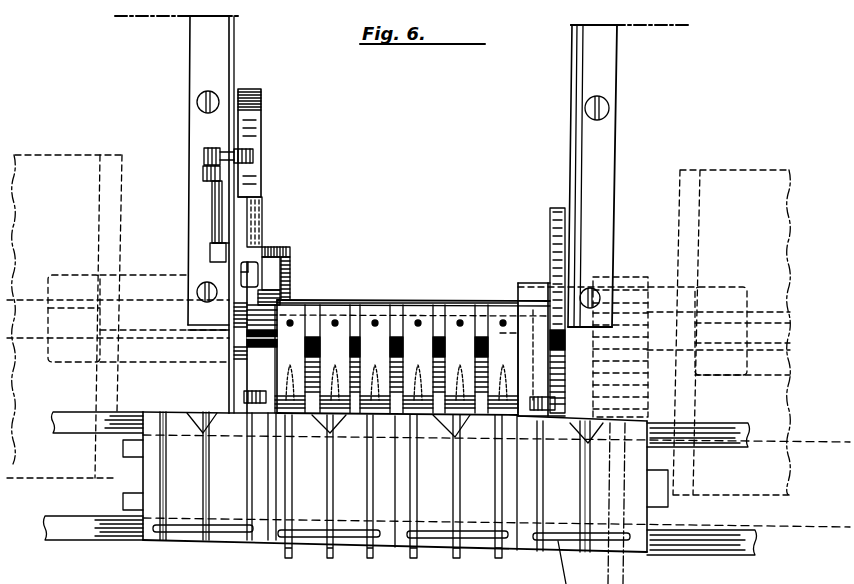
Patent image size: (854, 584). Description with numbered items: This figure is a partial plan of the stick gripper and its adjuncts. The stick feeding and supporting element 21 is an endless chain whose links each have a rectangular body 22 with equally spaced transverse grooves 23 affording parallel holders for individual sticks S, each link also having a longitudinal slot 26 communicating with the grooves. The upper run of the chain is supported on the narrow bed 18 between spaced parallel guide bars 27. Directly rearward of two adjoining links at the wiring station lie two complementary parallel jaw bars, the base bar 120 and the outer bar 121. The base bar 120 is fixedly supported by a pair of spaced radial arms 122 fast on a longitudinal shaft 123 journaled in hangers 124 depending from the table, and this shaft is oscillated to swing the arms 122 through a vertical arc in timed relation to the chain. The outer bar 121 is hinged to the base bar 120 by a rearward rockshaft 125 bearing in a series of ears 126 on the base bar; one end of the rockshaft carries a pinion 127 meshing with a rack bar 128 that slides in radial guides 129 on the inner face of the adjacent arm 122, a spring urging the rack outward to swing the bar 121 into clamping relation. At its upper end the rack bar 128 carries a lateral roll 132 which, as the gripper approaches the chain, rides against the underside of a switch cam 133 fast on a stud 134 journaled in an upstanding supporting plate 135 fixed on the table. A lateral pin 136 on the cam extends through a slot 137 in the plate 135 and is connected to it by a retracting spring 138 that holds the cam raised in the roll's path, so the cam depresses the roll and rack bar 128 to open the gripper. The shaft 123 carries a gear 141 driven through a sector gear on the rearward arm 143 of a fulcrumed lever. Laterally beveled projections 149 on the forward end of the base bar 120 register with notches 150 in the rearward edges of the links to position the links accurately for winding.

The bed 18 is at (53, 461).
The stick feeding and supporting element 21 is at (244, 476).
The rectangular body 22 is at (637, 482).
The transverse grooves 23 is at (160, 507).
The slot 26 is at (222, 538).
The guide bars 27 is at (86, 520).
The stick S is at (458, 492).
The base bar 120 is at (260, 384).
The outer bar 121 is at (407, 398).
The radial arms 122 is at (246, 196).
The longitudinal shaft 123 is at (66, 298).
The hangers 124 is at (62, 155).
The rockshaft 125 is at (375, 313).
The ears 126 is at (440, 303).
The pinion 127 is at (243, 330).
The rack bar 128 is at (268, 268).
The radial guides 129 is at (290, 255).
The lateral roll 132 is at (247, 283).
The switch cam 133 is at (262, 100).
The stud 134 is at (243, 247).
The supporting plate 135 is at (229, 40).
The lateral pin 136 is at (227, 148).
The slot 137 is at (263, 150).
The retracting spring 138 is at (204, 162).
The gear 141 is at (636, 277).
The rearward arm 143 is at (617, 571).
The laterally beveled projections 149 is at (328, 425).
The notches 150 is at (200, 424).